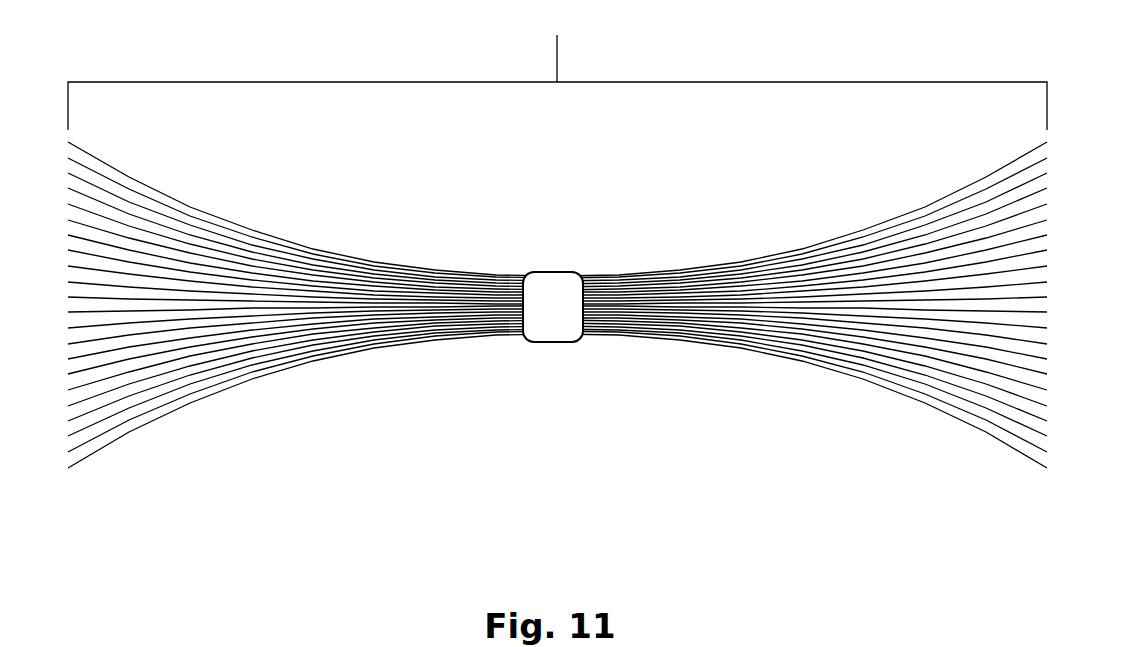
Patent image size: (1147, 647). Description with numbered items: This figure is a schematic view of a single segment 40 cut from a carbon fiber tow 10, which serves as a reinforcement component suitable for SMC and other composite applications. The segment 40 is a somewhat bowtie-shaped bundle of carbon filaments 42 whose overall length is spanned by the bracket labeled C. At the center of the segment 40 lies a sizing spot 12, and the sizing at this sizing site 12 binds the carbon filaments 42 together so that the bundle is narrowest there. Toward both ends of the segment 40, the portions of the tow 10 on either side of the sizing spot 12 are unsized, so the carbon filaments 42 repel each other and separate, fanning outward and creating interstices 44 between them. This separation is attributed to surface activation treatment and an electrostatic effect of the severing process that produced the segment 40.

The carbon fiber tow 10 is at (647, 343).
The sizing spot 12 is at (556, 272).
The segment 40 is at (222, 489).
The carbon filaments 42 is at (1048, 173).
The interstices 44 is at (1048, 228).